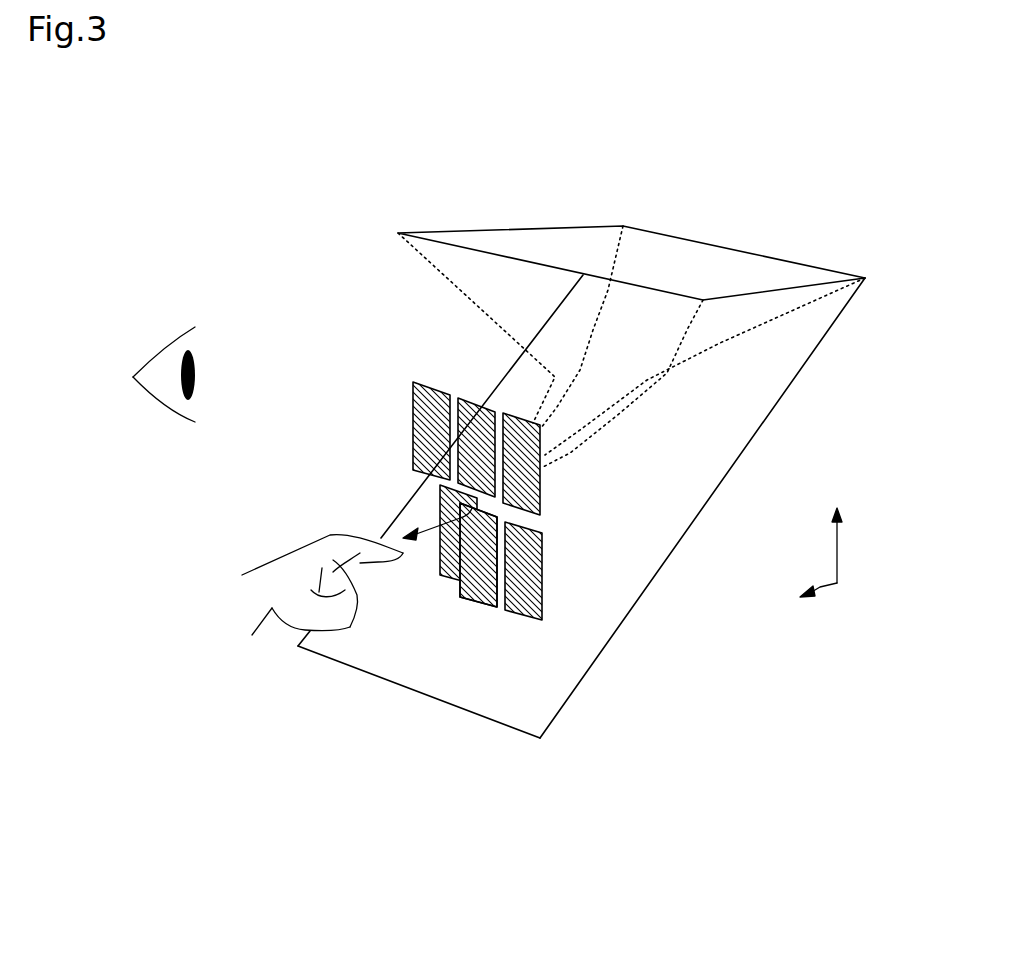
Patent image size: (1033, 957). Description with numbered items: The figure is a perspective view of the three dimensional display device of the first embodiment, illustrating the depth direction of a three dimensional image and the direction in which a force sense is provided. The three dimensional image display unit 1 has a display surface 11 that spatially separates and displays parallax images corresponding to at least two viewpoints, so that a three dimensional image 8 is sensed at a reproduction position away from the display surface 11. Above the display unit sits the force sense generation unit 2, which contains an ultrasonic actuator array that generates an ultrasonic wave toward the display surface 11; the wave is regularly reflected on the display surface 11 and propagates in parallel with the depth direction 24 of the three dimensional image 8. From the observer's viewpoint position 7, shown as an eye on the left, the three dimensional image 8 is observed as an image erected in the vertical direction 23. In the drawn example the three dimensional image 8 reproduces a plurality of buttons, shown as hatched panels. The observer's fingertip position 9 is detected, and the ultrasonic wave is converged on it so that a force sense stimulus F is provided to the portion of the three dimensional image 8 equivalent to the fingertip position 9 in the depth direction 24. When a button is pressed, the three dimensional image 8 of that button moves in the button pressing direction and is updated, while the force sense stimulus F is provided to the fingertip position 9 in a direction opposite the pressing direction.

The three dimensional image display unit 1 is at (612, 612).
The force sense generation unit 2 is at (600, 240).
The observer's viewpoint position 7 is at (188, 348).
The three dimensional image 8 is at (463, 517).
The fingertip position 9 is at (378, 537).
The display surface 11 is at (740, 410).
The vertical direction 23 is at (833, 543).
The depth direction 24 is at (822, 587).
The force sense stimulus F is at (427, 540).